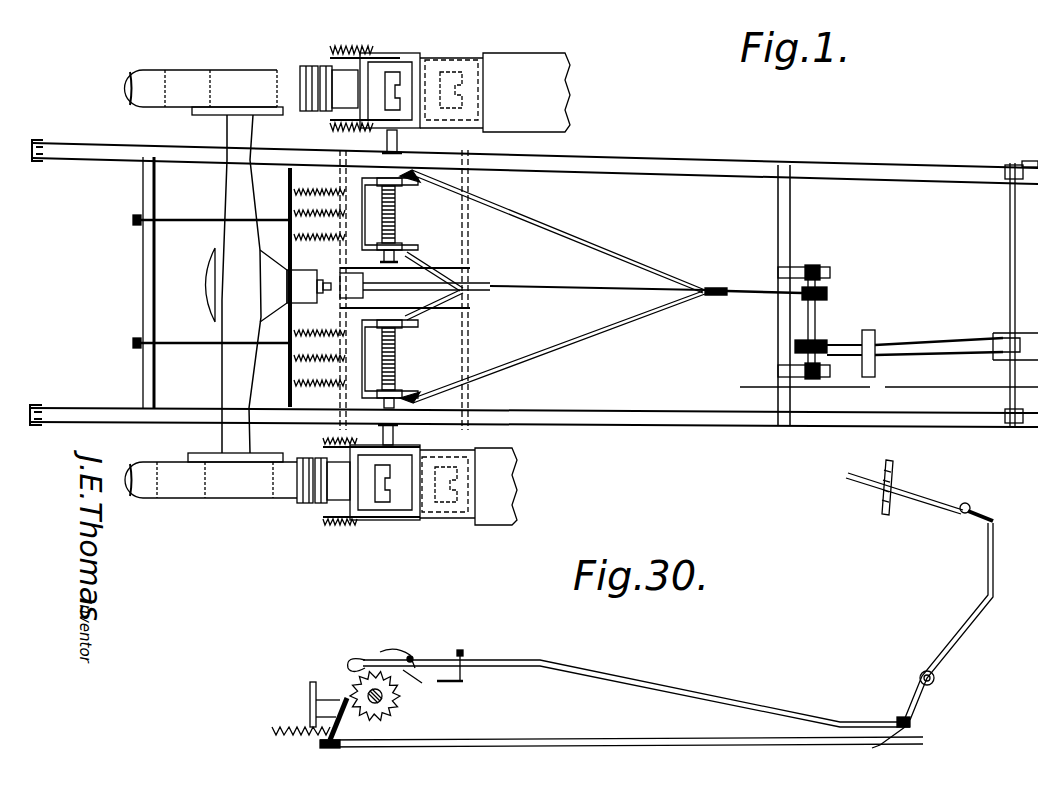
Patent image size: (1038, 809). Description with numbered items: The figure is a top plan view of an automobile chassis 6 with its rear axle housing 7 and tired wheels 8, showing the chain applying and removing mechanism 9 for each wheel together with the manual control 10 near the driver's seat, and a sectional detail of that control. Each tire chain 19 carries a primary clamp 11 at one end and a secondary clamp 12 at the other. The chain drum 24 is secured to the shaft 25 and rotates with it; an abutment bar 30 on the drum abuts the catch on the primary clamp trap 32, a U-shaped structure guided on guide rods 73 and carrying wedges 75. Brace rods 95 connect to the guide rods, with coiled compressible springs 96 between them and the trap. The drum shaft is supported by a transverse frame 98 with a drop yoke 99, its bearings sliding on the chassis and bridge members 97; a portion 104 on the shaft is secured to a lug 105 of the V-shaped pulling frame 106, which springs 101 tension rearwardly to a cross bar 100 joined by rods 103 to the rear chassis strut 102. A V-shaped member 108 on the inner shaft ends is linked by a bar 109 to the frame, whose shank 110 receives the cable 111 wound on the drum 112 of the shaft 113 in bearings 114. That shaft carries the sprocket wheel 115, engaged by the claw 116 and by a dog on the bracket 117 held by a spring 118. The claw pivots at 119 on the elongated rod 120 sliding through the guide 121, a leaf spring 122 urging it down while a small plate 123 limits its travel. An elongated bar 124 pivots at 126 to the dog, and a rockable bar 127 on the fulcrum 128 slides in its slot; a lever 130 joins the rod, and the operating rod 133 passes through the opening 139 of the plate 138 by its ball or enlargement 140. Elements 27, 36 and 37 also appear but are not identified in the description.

In FIG. 1, the chassis 6 is at (655, 163).
In FIG. 1, the rear axle housing 7 is at (222, 188).
In FIG. 1, the tired wheels 8 is at (245, 70).
In FIG. 1, the chain applying and removing mechanism 9 is at (445, 50).
In FIG. 1, the manual control 10 is at (865, 320).
In FIG. 1, the primary clamp 11 is at (310, 113).
In FIG. 1, the secondary clamp 12 is at (300, 78).
In FIG. 1, the tire chain 19 is at (185, 85).
In FIG. 1, the chain drum 24 is at (403, 70).
In FIG. 1, the shaft 25 is at (385, 120).
In FIG. 1, the valve member 27 is at (372, 495).
In FIG. 1, the abutment bar 30 is at (875, 387).
In FIG. 1, the primary clamp trap 32 is at (372, 95).
In FIG. 1, the guide bar 36 is at (320, 366).
In FIG. 1, the shaft 37 is at (352, 300).
In FIG. 1, the guide rods 73 is at (420, 62).
In FIG. 1, the wedges 75 is at (355, 60).
In FIG. 1, the brace rod 95 is at (400, 368).
In FIG. 1, the coiled compressible spring 96 is at (325, 440).
In FIG. 1, the bridge members 97 is at (465, 328).
In FIG. 1, the transverse frame 98 is at (340, 314).
In FIG. 1, the yoke 99 is at (338, 193).
In FIG. 1, the cross bar 100 is at (268, 294).
In FIG. 1, the springs 101 is at (290, 188).
In FIG. 1, the rear chassis strut 102 is at (142, 303).
In FIG. 1, the rods 103 is at (196, 224).
In FIG. 1, the portion 104 is at (396, 214).
In FIG. 1, the lug 105 is at (465, 190).
In FIG. 1, the V-shaped frame 106 is at (615, 250).
In FIG. 1, the V-shaped member 108 is at (426, 262).
In FIG. 1, the bar 109 is at (543, 285).
In FIG. 1, the shank 110 is at (710, 285).
In FIG. 1, the cable 111 is at (748, 288).
In FIG. 1, the drum 112 is at (828, 294).
In FIG. 1, the shaft 113 is at (808, 317).
In FIG. 30, the shaft 113 is at (385, 703).
In FIG. 1, the bearings 114 is at (823, 266).
In FIG. 1, the sprocket wheel 115 is at (818, 342).
In FIG. 30, the sprocket wheel 115 is at (345, 663).
In FIG. 30, the claw 116 is at (352, 660).
In FIG. 30, the bracket 117 is at (310, 710).
In FIG. 30, the spring 118 is at (282, 735).
In FIG. 30, the pivotal connection 119 is at (412, 655).
In FIG. 1, the elongated rod 120 is at (940, 355).
In FIG. 30, the elongated rod 120 is at (543, 660).
In FIG. 1, the guide 121 is at (876, 365).
In FIG. 30, the guide 121 is at (462, 650).
In FIG. 30, the leaf spring 122 is at (392, 652).
In FIG. 30, the small plate 123 is at (423, 688).
In FIG. 1, the elongated bar 124 is at (905, 340).
In FIG. 30, the elongated bar 124 is at (600, 740).
In FIG. 30, the pivotal connection 126 is at (322, 750).
In FIG. 30, the rockable bar 127 is at (960, 630).
In FIG. 30, the fulcrum 128 is at (920, 675).
In FIG. 30, the lever 130 is at (910, 712).
In FIG. 1, the operating rod 133 is at (1008, 335).
In FIG. 30, the plate 138 is at (887, 465).
In FIG. 30, the opening 139 is at (928, 495).
In FIG. 30, the ball or enlargement 140 is at (970, 505).